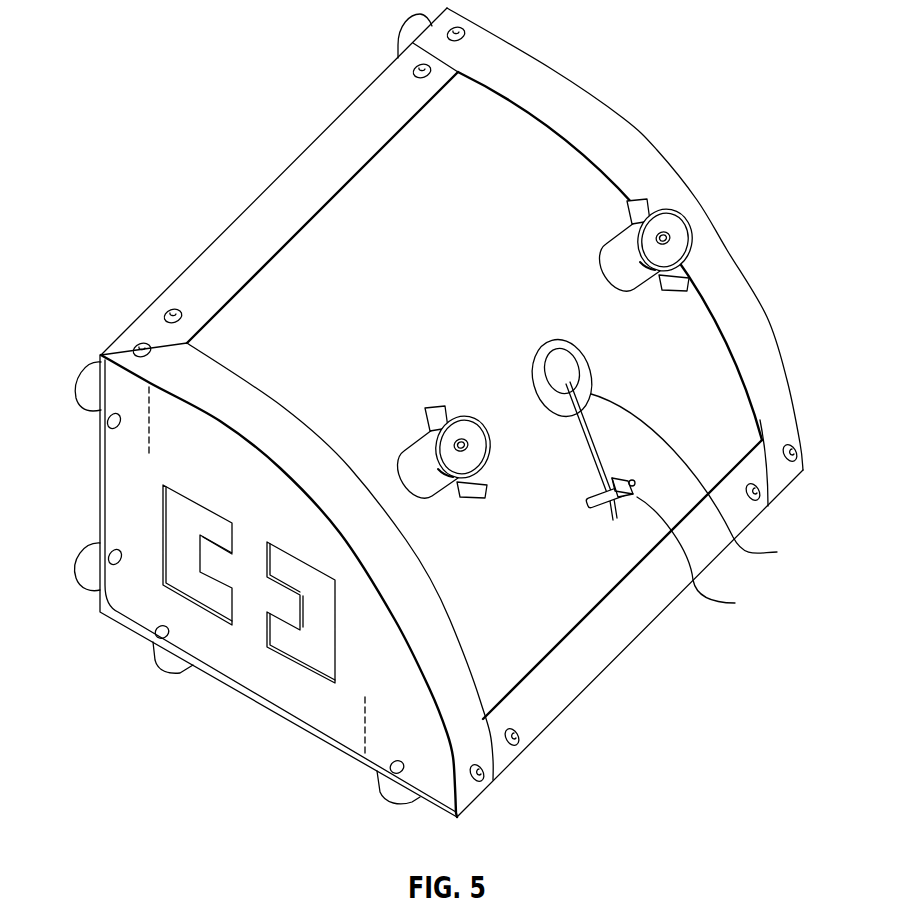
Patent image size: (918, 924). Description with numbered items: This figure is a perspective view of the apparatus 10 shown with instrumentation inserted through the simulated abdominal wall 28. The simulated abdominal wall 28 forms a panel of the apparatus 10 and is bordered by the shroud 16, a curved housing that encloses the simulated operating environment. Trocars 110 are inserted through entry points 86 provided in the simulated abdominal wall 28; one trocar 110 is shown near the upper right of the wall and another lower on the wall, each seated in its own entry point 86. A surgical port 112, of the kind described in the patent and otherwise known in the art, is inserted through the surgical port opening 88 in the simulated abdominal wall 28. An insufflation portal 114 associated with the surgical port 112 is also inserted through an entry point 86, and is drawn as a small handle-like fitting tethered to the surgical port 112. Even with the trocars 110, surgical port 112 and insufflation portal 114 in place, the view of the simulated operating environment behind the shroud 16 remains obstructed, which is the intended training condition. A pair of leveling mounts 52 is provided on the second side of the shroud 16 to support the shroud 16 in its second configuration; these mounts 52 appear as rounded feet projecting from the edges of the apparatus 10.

The apparatus 10 is at (194, 44).
The shroud 16 is at (668, 106).
The simulated abdominal wall 28 is at (390, 274).
The leveling mounts 52 is at (92, 378).
The entry points 86 is at (611, 439).
The surgical port opening 88 is at (604, 379).
The trocars 110 is at (677, 240).
The surgical port 112 is at (700, 479).
The insufflation portal 114 is at (677, 547).